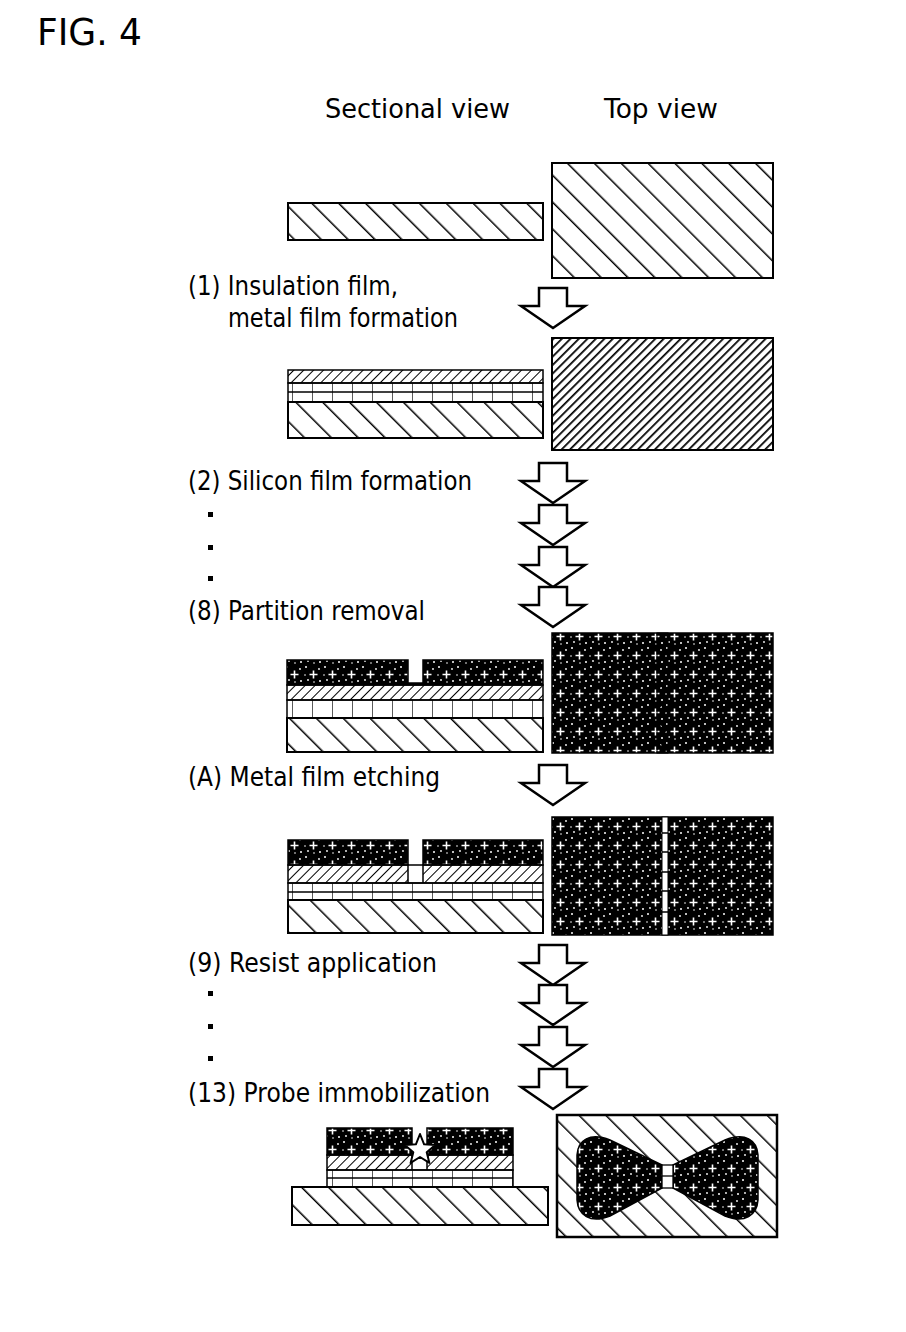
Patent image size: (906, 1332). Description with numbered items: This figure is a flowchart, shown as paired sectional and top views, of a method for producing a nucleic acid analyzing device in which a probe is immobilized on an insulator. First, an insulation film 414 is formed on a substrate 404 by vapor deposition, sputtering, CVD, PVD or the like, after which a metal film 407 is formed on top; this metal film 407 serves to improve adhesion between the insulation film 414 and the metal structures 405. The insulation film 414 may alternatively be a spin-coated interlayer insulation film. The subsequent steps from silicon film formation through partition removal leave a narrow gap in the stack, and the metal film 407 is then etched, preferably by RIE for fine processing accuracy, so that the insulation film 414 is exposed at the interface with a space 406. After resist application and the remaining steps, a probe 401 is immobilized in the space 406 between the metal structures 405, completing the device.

The probe 401 is at (421, 1165).
The substrate 404 is at (530, 220).
The metal structures 405 is at (327, 1140).
The space 406 is at (417, 855).
The metal film 407 is at (530, 394).
The insulation film 414 is at (343, 395).